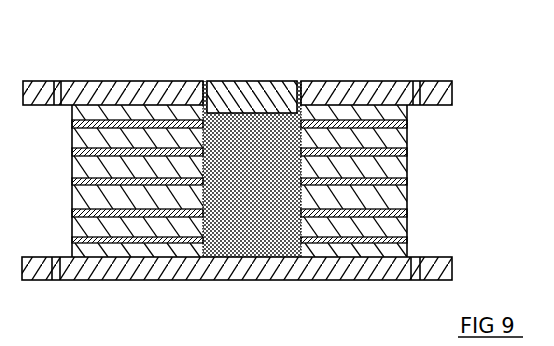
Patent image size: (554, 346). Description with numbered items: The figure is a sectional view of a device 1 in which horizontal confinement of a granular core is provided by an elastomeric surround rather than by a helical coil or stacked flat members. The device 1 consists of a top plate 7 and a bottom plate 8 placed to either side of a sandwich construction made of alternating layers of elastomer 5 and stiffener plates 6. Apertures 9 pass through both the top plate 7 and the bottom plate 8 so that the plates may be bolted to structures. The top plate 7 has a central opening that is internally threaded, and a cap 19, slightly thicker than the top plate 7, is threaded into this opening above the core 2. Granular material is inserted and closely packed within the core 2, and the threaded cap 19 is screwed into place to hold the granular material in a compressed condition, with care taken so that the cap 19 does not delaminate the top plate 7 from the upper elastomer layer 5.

The device 1 is at (328, 62).
The core 2 is at (258, 258).
The elastomer layer 5 is at (407, 114).
The stiffener plate 6 is at (407, 124).
The top plate 7 is at (148, 81).
The bottom plate 8 is at (112, 281).
The aperture 9 is at (57, 81).
The threaded cap 19 is at (255, 81).